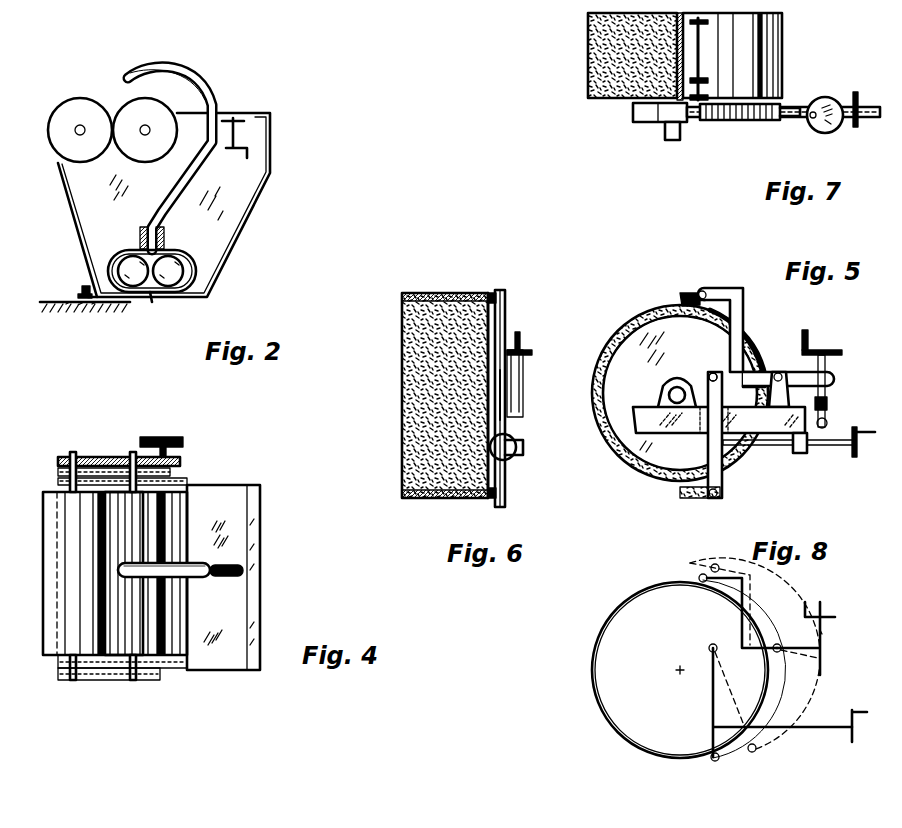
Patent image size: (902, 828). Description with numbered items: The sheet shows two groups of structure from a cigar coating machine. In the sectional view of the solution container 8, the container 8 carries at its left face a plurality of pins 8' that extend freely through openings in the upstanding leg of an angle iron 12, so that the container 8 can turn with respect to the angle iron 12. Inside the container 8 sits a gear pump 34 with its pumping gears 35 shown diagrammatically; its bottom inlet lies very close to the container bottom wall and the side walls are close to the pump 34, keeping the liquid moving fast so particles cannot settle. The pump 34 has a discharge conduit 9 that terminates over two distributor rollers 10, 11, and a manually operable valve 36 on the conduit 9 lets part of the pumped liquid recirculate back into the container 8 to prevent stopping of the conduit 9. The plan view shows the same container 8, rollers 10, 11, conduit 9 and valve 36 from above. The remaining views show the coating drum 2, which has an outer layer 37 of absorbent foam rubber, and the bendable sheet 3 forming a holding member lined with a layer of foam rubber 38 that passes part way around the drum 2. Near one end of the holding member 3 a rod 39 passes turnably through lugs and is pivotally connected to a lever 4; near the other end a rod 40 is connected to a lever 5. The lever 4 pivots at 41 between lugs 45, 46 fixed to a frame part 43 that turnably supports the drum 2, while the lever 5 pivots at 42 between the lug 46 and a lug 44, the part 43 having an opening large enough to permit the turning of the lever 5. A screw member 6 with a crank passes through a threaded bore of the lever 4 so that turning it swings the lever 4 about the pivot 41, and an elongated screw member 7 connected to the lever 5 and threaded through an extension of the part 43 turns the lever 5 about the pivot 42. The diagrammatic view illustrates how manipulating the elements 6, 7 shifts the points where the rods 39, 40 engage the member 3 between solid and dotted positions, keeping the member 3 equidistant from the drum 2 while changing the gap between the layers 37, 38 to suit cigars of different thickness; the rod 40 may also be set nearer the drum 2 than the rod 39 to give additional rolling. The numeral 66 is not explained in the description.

In FIG. 5, the coating drum 2 is at (680, 393).
In FIG. 8, the coating drum 2 is at (632, 680).
In FIG. 6, the bendable sheet 3 is at (440, 293).
In FIG. 5, the bendable sheet 3 is at (696, 290).
In FIG. 7, the bendable sheet 3 is at (782, 46).
In FIG. 8, the bendable sheet 3 is at (690, 575).
In FIG. 5, the lever 4 is at (745, 300).
In FIG. 8, the lever 4 is at (748, 590).
In FIG. 6, the lever 5 is at (505, 494).
In FIG. 5, the lever 5 is at (723, 480).
In FIG. 8, the lever 5 is at (700, 703).
In FIG. 6, the turnable screw means 6 is at (521, 358).
In FIG. 7, the turnable screw means 6 is at (832, 130).
In FIG. 8, the turnable screw means 6 is at (822, 632).
In FIG. 6, the turnable screw means 7 is at (520, 450).
In FIG. 5, the turnable screw means 7 is at (835, 446).
In FIG. 7, the turnable screw means 7 is at (750, 120).
In FIG. 8, the turnable screw means 7 is at (795, 730).
In FIG. 2, the container 8 is at (157, 205).
In FIG. 4, the container 8 is at (223, 559).
In FIG. 2, the pins 8' is at (69, 280).
In FIG. 2, the discharge conduit 9 is at (195, 82).
In FIG. 4, the discharge conduit 9 is at (190, 563).
In FIG. 2, the distributor roller 10 is at (80, 130).
In FIG. 4, the distributor roller 10 is at (78, 623).
In FIG. 2, the distributor roller 11 is at (145, 130).
In FIG. 4, the distributor roller 11 is at (135, 628).
In FIG. 2, the angle iron 12 is at (70, 312).
In FIG. 2, the gear pump 34 is at (124, 253).
In FIG. 2, the pumping gears 35 is at (153, 300).
In FIG. 2, the manually operable valve 36 is at (236, 118).
In FIG. 4, the manually operable valve 36 is at (228, 578).
In FIG. 5, the outer layer of absorbent foam rubber 37 is at (643, 318).
In FIG. 7, the outer layer of absorbent foam rubber 37 is at (588, 57).
In FIG. 6, the layer of foam rubber 38 is at (402, 362).
In FIG. 5, the layer of foam rubber 38 is at (684, 292).
In FIG. 6, the rod 39 is at (496, 292).
In FIG. 5, the rod 39 is at (707, 291).
In FIG. 7, the rod 39 is at (702, 58).
In FIG. 8, the rod 39 is at (714, 564).
In FIG. 6, the rod 40 is at (496, 500).
In FIG. 5, the rod 40 is at (717, 496).
In FIG. 8, the rod 40 is at (714, 761).
In FIG. 5, the pivot 41 is at (780, 372).
In FIG. 8, the pivot 41 is at (780, 645).
In FIG. 5, the pivot 42 is at (713, 372).
In FIG. 8, the pivot 42 is at (711, 645).
In FIG. 6, the frame part 43 is at (512, 438).
In FIG. 5, the frame part 43 is at (719, 419).
In FIG. 7, the frame part 43 is at (638, 122).
In FIG. 6, the lug 44 is at (523, 403).
In FIG. 5, the lug 44 is at (678, 385).
In FIG. 7, the lug 44 is at (710, 128).
In FIG. 5, the lug 45 is at (788, 390).
In FIG. 7, the lug 45 is at (786, 120).
In FIG. 6, the lug 46 is at (480, 390).
In FIG. 7, the lug 46 is at (780, 104).
In FIG. 5, the screw 66 is at (835, 350).